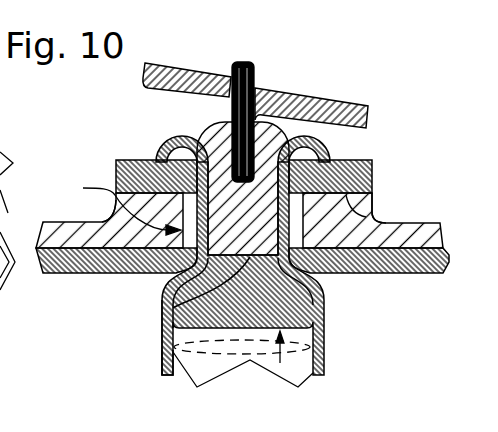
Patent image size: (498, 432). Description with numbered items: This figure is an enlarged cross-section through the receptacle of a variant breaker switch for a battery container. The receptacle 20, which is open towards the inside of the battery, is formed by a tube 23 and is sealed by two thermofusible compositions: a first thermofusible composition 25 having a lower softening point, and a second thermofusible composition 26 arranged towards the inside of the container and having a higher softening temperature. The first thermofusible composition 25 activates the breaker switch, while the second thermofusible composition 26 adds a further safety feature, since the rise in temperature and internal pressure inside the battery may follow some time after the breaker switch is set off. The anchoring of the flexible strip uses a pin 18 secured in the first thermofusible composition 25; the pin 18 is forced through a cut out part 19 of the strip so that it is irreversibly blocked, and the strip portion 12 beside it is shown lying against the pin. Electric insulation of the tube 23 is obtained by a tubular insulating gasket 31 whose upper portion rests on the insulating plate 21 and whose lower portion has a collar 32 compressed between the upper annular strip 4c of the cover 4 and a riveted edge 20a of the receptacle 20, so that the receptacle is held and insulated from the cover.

The cover 4 is at (432, 242).
The upper annular strip 4c is at (374, 217).
The upper bracket plate 12 is at (187, 72).
The pin 18 is at (250, 62).
The cut out part 19 is at (224, 65).
The receptacle 20 is at (280, 360).
The riveted edge 20a is at (298, 134).
The insulating plate 21 is at (443, 262).
The tube 23 is at (162, 352).
The first thermofusible composition 25 is at (162, 306).
The second thermofusible composition 26 is at (313, 313).
The tubular insulating gasket 31 is at (117, 206).
The collar 32 is at (140, 161).